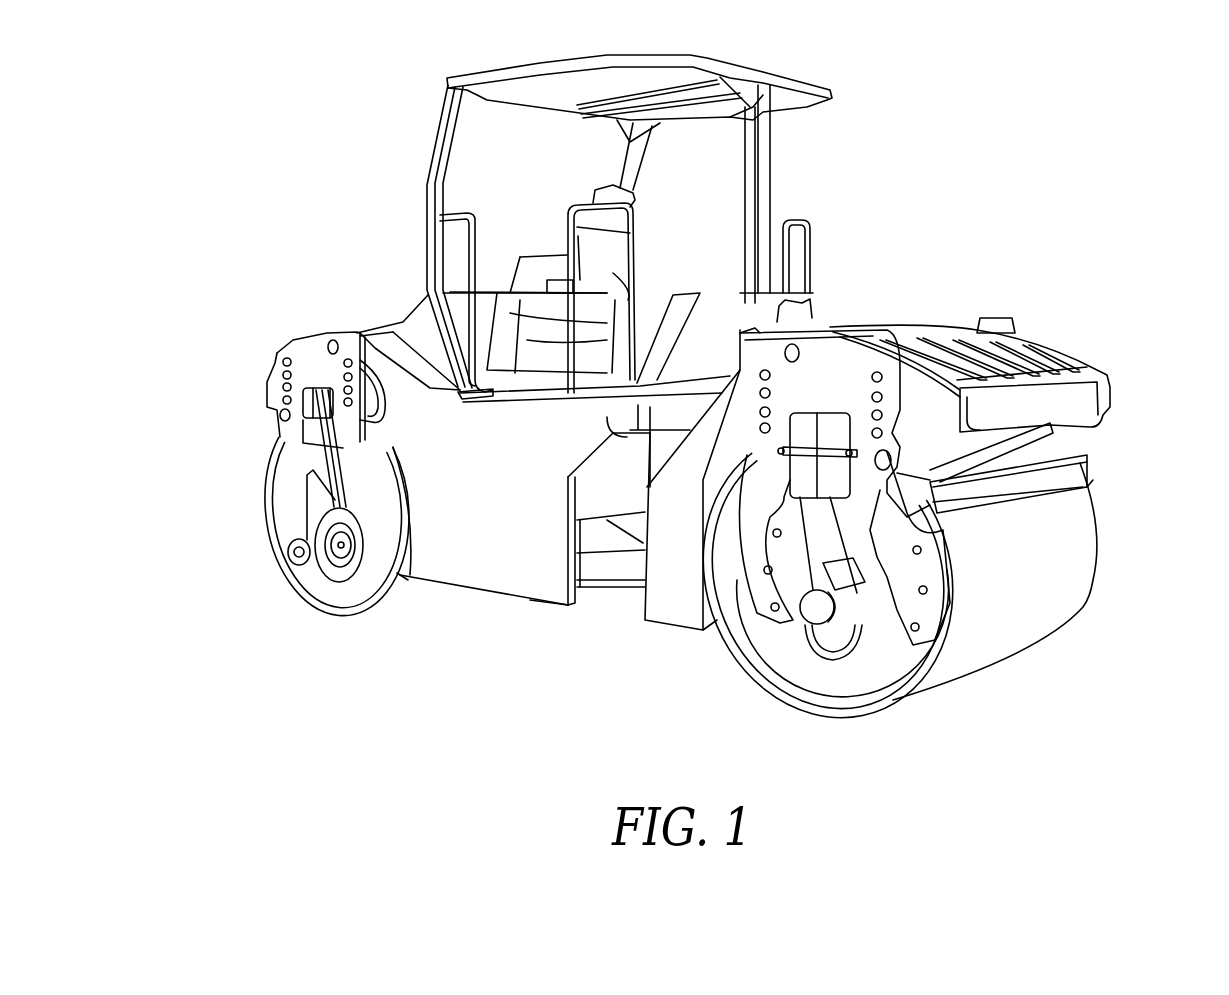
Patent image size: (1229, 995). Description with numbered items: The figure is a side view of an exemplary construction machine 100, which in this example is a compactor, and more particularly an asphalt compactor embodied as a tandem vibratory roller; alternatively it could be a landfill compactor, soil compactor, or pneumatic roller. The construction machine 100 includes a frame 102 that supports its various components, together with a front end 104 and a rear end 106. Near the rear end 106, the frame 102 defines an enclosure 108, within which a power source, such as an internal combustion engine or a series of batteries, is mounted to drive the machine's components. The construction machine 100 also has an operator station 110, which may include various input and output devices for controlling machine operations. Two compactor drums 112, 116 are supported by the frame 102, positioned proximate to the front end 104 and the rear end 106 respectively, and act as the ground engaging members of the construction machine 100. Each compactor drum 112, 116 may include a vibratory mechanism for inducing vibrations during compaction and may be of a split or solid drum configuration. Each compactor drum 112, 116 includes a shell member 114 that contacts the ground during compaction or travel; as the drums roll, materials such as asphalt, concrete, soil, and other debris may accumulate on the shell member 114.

The construction machine 100 is at (1093, 103).
The frame 102 is at (678, 555).
The front end 104 is at (233, 420).
The rear end 106 is at (1138, 438).
The enclosure 108 is at (936, 330).
The operator station 110 is at (432, 185).
The compactor drum 112 is at (268, 565).
The shell member 114 is at (278, 508).
The compactor drum 116 is at (1097, 592).